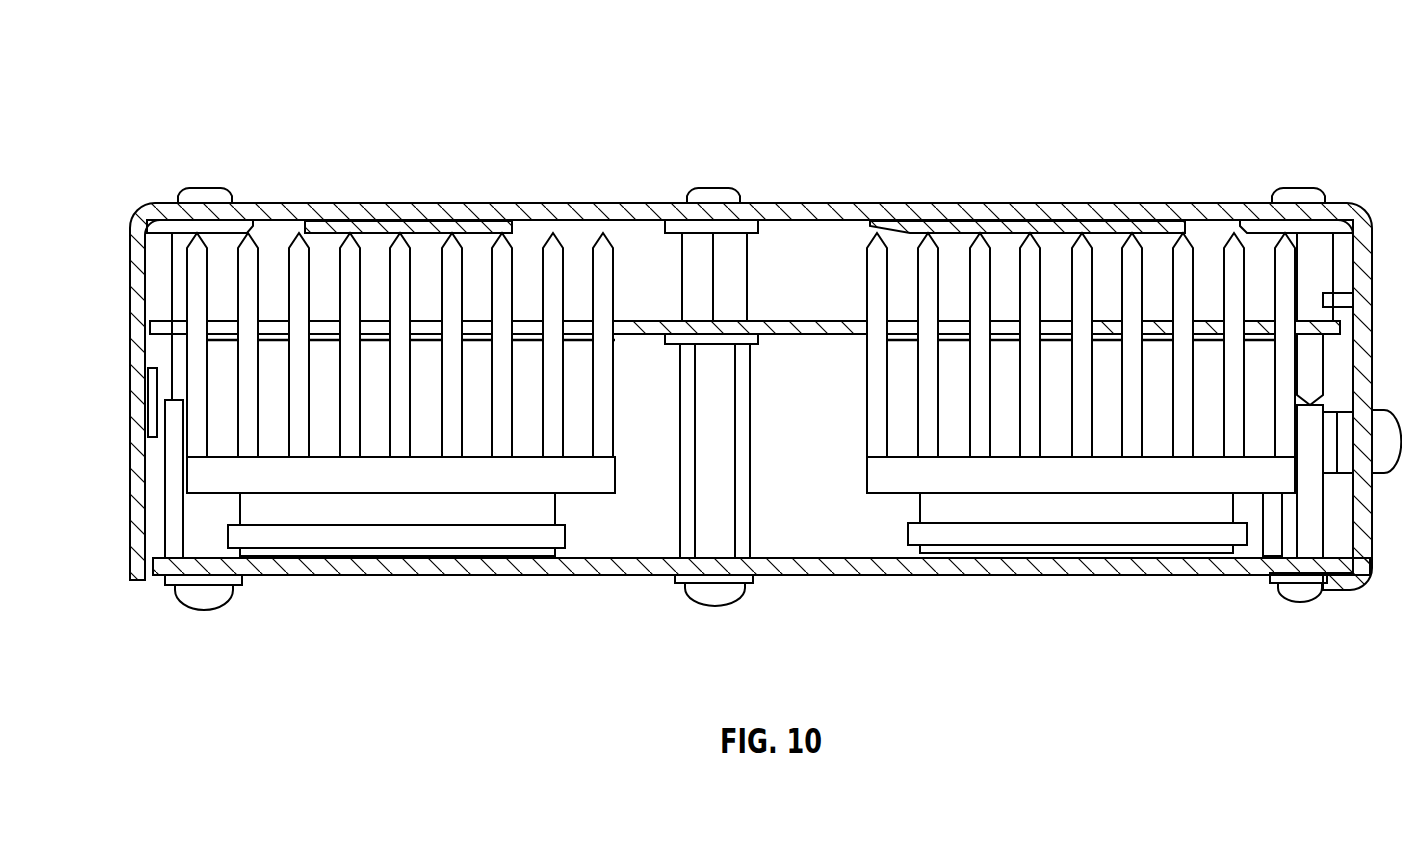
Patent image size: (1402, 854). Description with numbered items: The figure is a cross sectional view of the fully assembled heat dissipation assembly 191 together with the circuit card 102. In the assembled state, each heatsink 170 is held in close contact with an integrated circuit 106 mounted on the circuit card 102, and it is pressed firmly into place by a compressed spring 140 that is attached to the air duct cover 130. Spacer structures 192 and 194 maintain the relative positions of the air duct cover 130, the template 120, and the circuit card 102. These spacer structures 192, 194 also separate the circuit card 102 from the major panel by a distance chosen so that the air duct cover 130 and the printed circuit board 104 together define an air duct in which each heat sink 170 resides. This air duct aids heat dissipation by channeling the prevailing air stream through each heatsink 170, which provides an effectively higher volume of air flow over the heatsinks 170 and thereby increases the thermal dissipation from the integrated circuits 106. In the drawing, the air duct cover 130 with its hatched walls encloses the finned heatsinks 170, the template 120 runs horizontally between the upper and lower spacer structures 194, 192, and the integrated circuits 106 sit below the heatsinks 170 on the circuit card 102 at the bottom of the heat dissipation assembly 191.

The heat dissipation assembly 191 is at (326, 146).
The air duct cover 130 is at (132, 226).
The compressed spring 140 is at (465, 232).
The heatsink 170 is at (518, 262).
The spacer structure 194 is at (747, 253).
The template 120 is at (810, 328).
The spacer structure 192 is at (693, 513).
The integrated circuit 106 is at (365, 515).
The circuit card 102 is at (1015, 567).
The printed circuit board 104 is at (1191, 578).